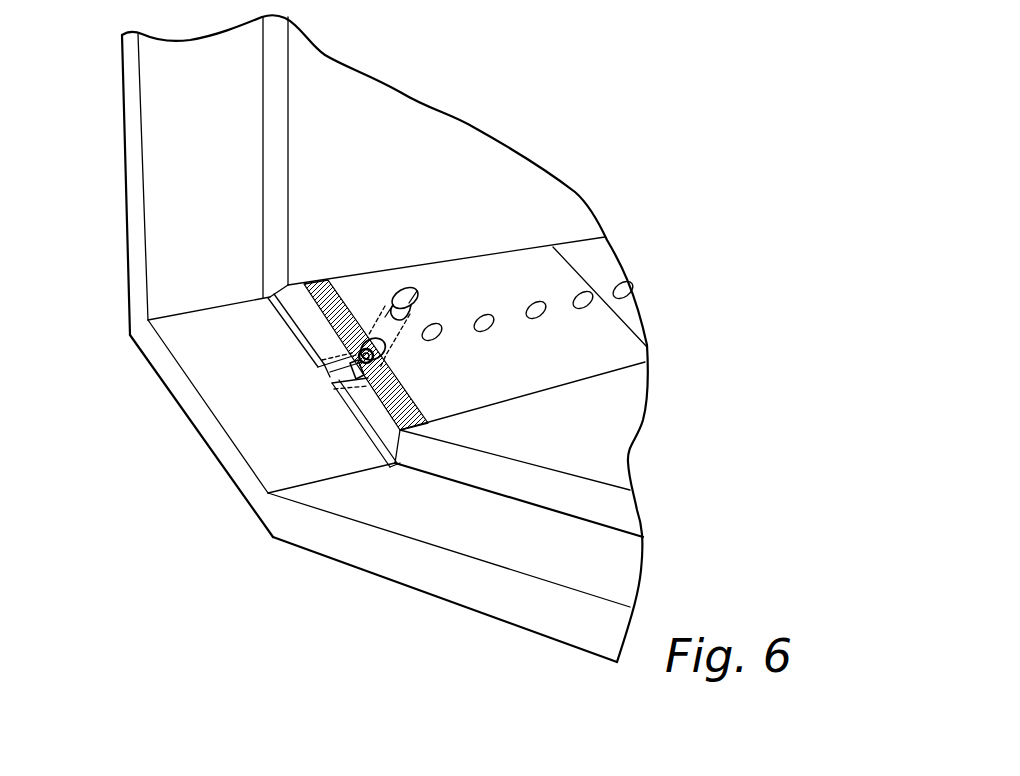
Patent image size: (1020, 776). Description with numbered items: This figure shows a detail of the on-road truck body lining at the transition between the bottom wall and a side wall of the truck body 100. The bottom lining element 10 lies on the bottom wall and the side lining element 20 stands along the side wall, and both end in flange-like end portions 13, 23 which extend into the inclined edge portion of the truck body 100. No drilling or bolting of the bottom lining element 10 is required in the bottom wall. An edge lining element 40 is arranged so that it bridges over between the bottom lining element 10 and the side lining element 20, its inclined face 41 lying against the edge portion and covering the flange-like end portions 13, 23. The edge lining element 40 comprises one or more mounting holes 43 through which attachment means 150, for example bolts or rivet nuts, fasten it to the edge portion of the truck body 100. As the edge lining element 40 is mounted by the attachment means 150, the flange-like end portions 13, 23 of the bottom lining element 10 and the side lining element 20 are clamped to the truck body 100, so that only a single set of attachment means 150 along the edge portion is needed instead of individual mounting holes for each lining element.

The bottom lining element 10 is at (594, 439).
The flange-like end portion 13 is at (373, 418).
The side lining element 20 is at (419, 206).
The flange-like end portion 23 is at (310, 333).
The edge lining element 40 is at (426, 283).
The bracket face 41 is at (494, 379).
The mounting hole 43 is at (368, 338).
The truck body 100 is at (348, 550).
The attachment means 150 is at (335, 372).